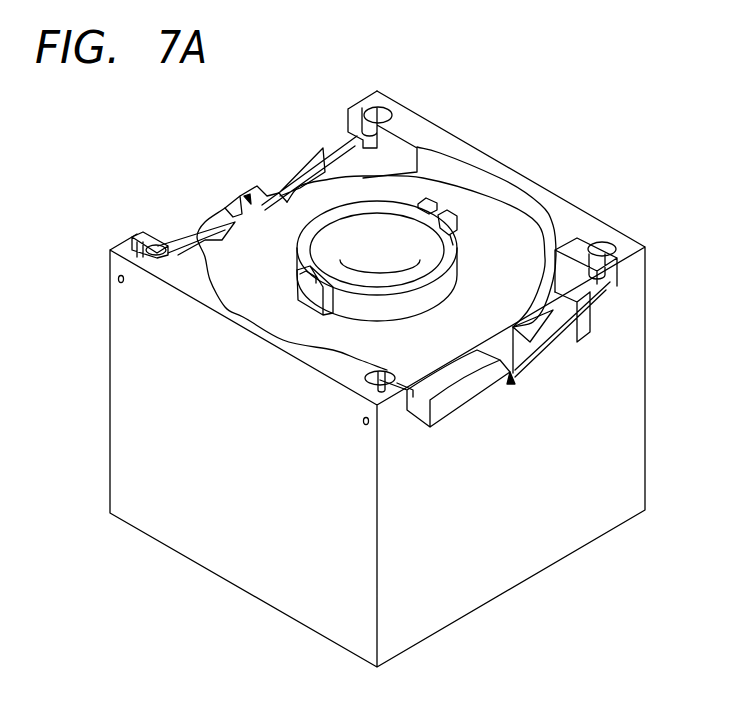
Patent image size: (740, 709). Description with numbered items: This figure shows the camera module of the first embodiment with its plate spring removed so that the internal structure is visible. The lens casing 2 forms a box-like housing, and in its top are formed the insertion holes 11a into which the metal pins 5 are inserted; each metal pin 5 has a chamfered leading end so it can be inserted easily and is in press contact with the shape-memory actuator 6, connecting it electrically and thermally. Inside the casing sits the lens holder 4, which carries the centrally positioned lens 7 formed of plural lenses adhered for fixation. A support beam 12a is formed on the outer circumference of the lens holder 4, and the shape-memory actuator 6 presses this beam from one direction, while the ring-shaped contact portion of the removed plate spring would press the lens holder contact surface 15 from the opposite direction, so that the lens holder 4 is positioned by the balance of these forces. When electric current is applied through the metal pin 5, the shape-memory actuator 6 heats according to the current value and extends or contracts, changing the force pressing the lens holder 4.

The lens casing 2 is at (592, 532).
The lens holder 4 is at (493, 217).
The metal pin 5 is at (352, 118).
The shape-memory actuator 6 is at (310, 156).
The lens 7 is at (381, 268).
The insertion holes of the metal pin 11a is at (384, 110).
The support beam of the lens holder 12a is at (247, 198).
The lens holder contact surface 15 is at (450, 247).